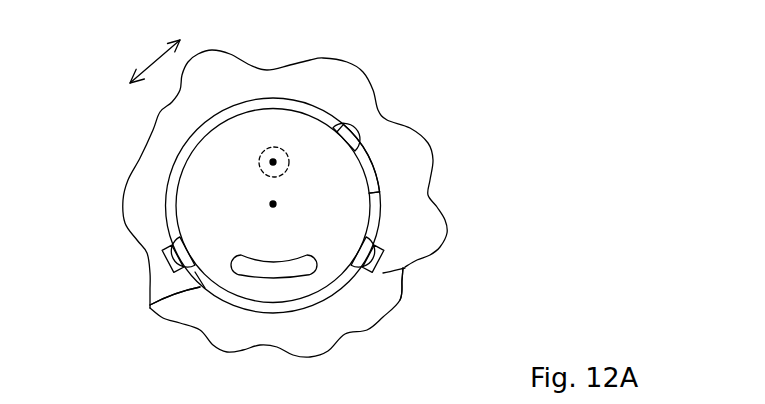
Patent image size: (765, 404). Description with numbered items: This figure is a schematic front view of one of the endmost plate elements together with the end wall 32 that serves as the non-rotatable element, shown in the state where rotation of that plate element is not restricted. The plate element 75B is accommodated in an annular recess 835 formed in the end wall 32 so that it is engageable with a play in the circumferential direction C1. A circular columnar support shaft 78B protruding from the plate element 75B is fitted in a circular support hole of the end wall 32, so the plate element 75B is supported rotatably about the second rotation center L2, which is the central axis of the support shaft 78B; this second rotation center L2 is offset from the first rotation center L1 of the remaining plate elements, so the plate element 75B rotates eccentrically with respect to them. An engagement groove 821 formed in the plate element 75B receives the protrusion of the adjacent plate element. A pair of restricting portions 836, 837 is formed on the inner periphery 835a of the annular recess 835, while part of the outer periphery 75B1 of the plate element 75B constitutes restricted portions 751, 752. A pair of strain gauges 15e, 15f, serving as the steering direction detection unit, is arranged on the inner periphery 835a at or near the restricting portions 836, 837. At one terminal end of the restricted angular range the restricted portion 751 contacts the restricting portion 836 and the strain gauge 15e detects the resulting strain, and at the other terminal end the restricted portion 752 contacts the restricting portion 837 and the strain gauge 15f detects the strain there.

The end wall 32 is at (350, 85).
The annular recess 835 is at (300, 103).
The inner periphery of the annular recess 835a is at (355, 147).
The plate element 75B is at (370, 173).
The outer periphery of the plate element 75B1 is at (381, 189).
The restricting portion 836 is at (385, 236).
The restricting portion 837 is at (163, 247).
The strain gauge 15e is at (405, 268).
The strain gauge 15f is at (167, 266).
The restricted portion 751 is at (400, 300).
The restricted portion 752 is at (150, 305).
The engagement groove 821 is at (282, 277).
The support shaft 78B is at (266, 157).
The first rotation center L1 is at (270, 204).
The second rotation center L2 is at (270, 162).
The circumferential direction C1 is at (158, 44).